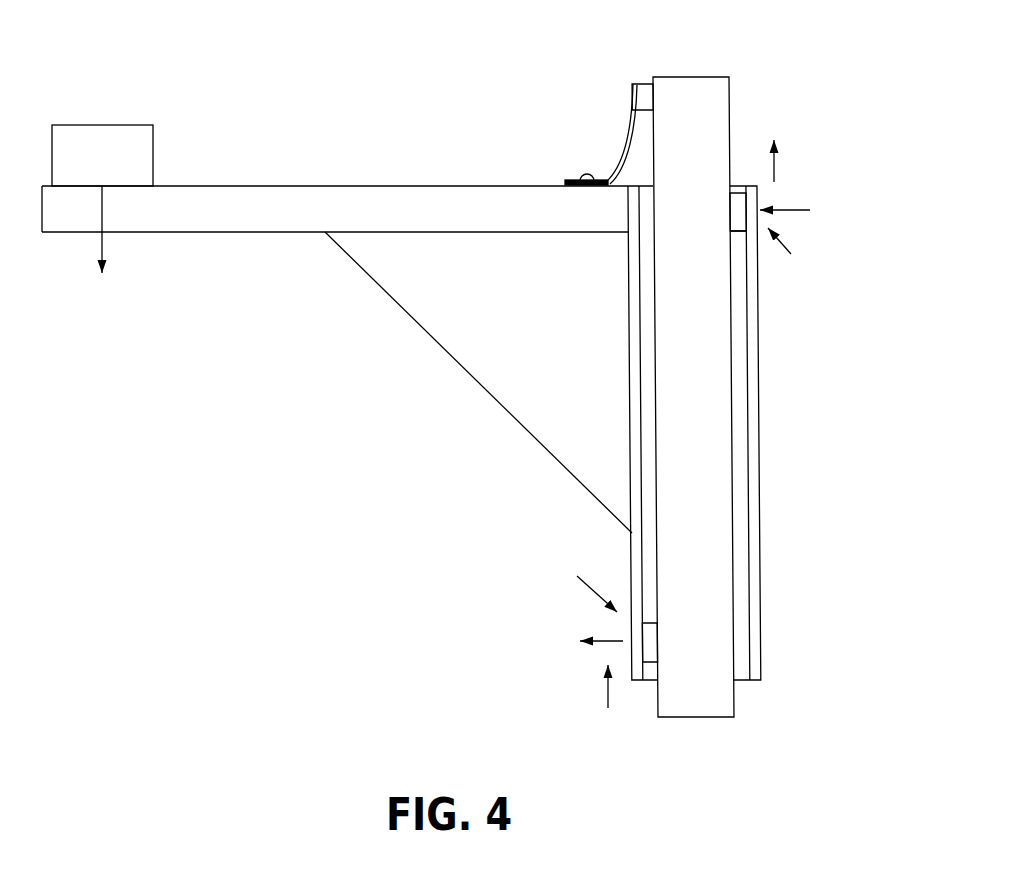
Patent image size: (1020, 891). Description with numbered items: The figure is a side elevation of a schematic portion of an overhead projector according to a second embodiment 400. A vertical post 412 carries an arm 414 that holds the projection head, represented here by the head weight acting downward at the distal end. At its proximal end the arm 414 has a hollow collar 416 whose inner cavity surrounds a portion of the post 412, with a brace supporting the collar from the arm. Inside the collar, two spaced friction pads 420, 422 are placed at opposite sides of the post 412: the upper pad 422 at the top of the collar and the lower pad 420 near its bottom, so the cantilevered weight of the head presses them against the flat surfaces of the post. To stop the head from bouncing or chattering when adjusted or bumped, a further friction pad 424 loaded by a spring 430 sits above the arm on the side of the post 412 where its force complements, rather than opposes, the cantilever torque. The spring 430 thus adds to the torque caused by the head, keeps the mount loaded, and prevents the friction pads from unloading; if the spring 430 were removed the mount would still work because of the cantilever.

The second embodiment 400 is at (318, 488).
The post 412 is at (715, 98).
The arm 414 is at (175, 232).
The collar 416 is at (757, 462).
The friction pad 420 is at (650, 650).
The friction pad 422 is at (737, 202).
The spring-loaded friction pad 424 is at (645, 84).
The spring 430 is at (623, 142).